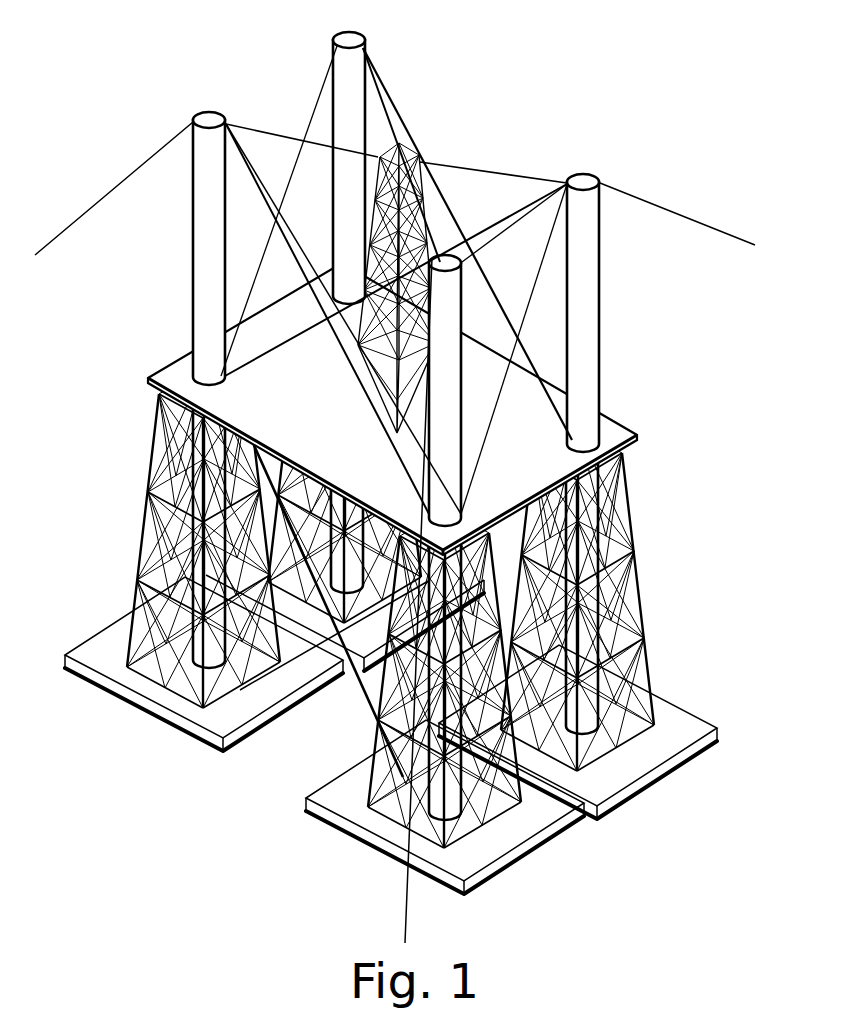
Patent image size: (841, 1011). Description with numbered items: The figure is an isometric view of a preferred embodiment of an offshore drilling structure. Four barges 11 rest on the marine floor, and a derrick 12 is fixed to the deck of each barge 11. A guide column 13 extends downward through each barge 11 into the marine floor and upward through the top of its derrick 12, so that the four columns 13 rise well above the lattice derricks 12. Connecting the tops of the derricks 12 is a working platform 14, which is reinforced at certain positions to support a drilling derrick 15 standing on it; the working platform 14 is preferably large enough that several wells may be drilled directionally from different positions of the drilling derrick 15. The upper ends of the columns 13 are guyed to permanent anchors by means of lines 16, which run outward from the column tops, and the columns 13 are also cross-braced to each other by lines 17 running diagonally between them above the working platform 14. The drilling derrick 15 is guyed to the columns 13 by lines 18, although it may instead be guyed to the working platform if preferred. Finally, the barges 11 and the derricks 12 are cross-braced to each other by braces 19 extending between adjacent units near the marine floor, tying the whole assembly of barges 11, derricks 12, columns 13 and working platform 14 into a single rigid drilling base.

The barge 11 is at (232, 738).
The derrick 12 is at (150, 541).
The guide column 13 is at (366, 38).
The working platform 14 is at (616, 430).
The drilling derrick 15 is at (380, 397).
The line 16 is at (95, 203).
The line 17 is at (394, 103).
The line 18 is at (290, 140).
The brace 19 is at (252, 678).